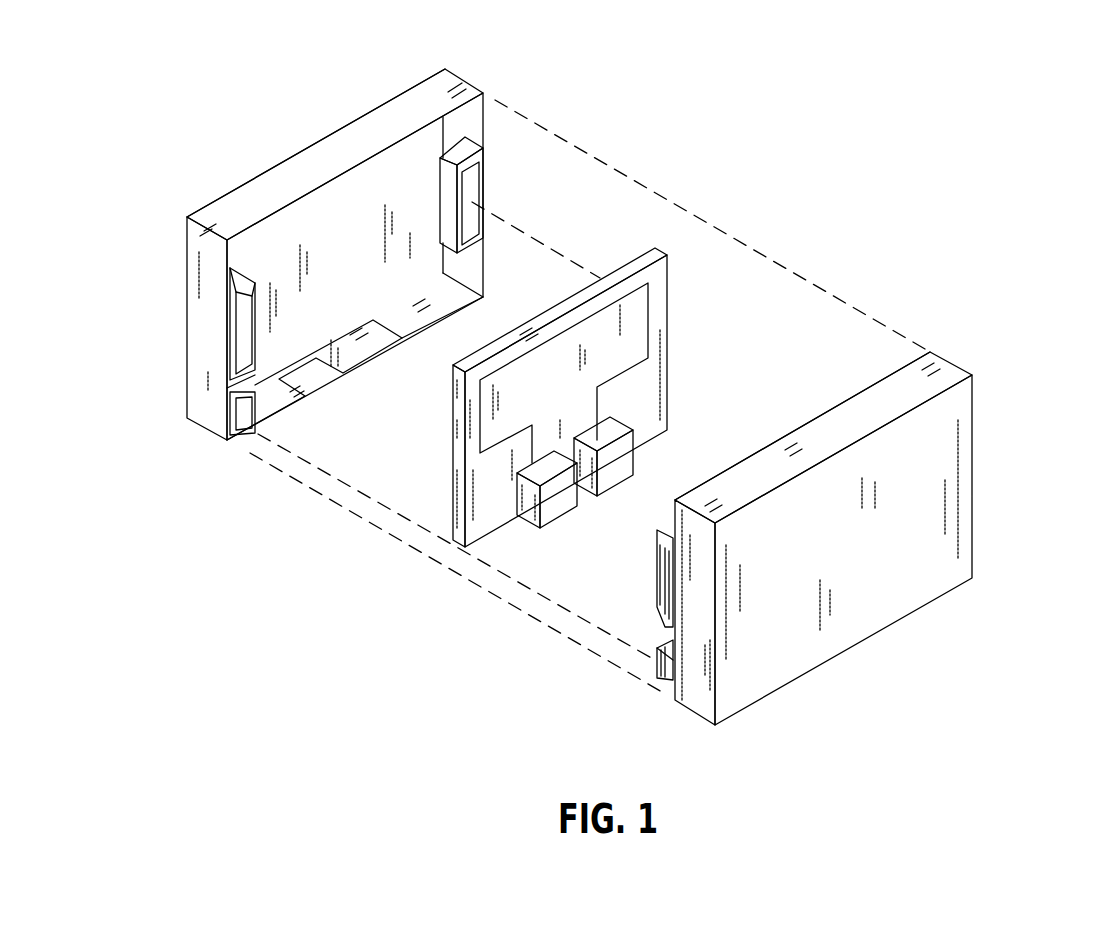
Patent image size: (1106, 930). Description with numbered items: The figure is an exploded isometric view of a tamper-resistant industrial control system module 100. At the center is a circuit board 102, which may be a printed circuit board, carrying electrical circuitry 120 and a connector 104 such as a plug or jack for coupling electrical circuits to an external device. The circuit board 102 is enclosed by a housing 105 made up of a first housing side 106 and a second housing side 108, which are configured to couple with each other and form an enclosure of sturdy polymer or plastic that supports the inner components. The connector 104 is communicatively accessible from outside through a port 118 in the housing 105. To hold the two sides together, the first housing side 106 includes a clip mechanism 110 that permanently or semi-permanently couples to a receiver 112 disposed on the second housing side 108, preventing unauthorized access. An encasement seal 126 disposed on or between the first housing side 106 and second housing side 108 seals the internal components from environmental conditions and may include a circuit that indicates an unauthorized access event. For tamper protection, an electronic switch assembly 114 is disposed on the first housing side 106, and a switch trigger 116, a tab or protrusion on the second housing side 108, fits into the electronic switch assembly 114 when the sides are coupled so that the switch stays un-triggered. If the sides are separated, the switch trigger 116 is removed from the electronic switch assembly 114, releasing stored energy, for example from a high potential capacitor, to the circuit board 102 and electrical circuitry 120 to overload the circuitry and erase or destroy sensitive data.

The industrial control system module 100 is at (944, 151).
The circuit board 102 is at (676, 300).
The connector 104 is at (545, 512).
The housing 105 is at (1003, 496).
The first housing side 106 is at (943, 368).
The second housing side 108 is at (388, 115).
The clip mechanism 110 is at (657, 576).
The receiver 112 is at (256, 327).
The electronic switch assembly 114 is at (242, 432).
The switch trigger 116 is at (667, 680).
The port 118 is at (312, 377).
The electrical circuitry 120 is at (608, 333).
The encasement seal 126 is at (338, 173).